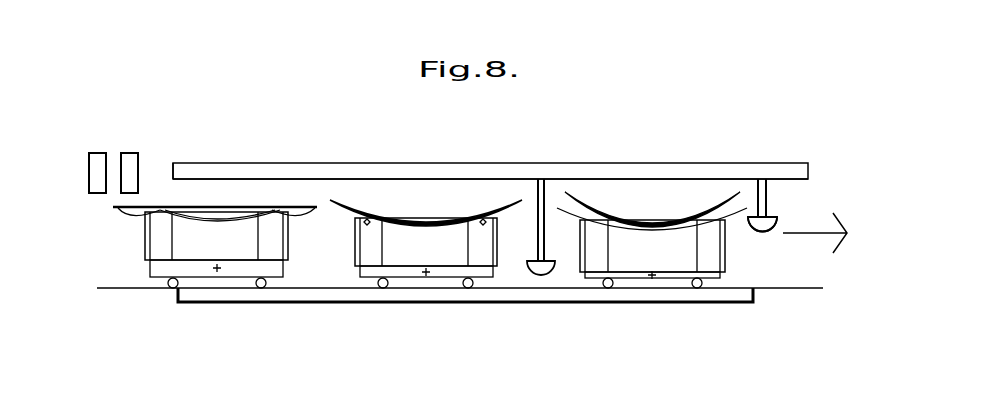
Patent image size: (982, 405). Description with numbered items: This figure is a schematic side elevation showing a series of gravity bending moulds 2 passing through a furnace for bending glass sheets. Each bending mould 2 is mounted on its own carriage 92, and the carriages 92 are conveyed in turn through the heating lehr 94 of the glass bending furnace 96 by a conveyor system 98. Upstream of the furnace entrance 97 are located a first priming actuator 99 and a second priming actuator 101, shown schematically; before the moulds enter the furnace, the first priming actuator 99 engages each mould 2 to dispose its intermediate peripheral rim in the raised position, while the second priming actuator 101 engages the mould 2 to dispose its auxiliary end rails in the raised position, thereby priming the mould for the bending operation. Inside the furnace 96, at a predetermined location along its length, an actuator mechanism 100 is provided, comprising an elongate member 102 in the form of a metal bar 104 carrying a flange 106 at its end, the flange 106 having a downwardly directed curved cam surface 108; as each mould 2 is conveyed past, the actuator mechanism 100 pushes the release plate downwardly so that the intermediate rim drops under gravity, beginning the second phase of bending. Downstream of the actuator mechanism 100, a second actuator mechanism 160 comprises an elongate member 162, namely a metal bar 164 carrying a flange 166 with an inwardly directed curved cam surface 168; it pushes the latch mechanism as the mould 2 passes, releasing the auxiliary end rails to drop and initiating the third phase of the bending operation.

The bending mould 2 is at (145, 240).
The carriage 92 is at (261, 289).
The heating lehr 94 is at (465, 195).
The glass bending furnace 96 is at (376, 195).
The furnace entrance 97 is at (173, 179).
The conveyor system 98 is at (790, 289).
The first priming actuator 99 is at (94, 153).
The second priming actuator 101 is at (127, 153).
The actuator mechanism 100 is at (556, 189).
The elongate member 102 is at (533, 190).
The metal bar 104 is at (547, 219).
The flange 106 is at (527, 262).
The curved cam surface 108 is at (541, 276).
The second actuator mechanism 160 is at (754, 191).
The elongate member 162 is at (768, 202).
The metal bar 164 is at (768, 207).
The flange 166 is at (772, 224).
The curved cam surface 168 is at (760, 232).